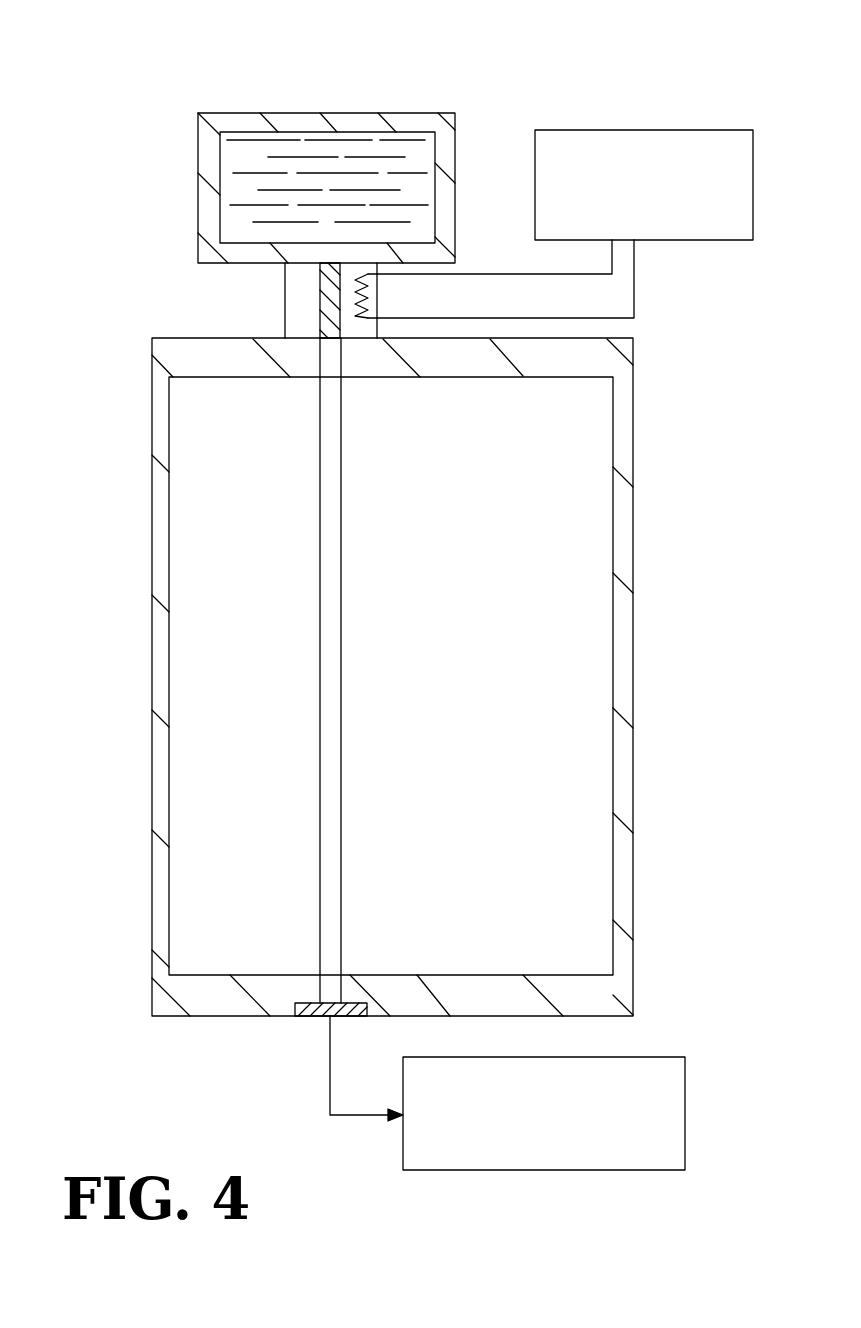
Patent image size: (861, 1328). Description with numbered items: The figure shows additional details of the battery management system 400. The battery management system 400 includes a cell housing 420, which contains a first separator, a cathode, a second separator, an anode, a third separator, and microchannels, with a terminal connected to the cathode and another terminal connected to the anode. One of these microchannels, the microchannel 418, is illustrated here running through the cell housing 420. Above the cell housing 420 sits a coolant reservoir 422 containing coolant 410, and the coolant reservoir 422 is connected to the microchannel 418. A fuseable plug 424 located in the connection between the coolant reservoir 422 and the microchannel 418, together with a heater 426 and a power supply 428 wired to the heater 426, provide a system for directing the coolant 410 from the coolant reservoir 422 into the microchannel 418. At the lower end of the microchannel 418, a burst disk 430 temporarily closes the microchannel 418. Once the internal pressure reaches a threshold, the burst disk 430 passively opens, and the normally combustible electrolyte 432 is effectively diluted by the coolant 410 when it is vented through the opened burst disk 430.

The battery management system 400 is at (630, 57).
The coolant 410 is at (487, 665).
The microchannel 418 is at (341, 463).
The cell housing 420 is at (633, 463).
The coolant reservoir 422 is at (343, 112).
The fuseable plug 424 is at (318, 290).
The heater 426 is at (370, 300).
The power supply 428 is at (678, 129).
The burst disk 430 is at (312, 1016).
The combustible electrolyte 432 is at (686, 1108).